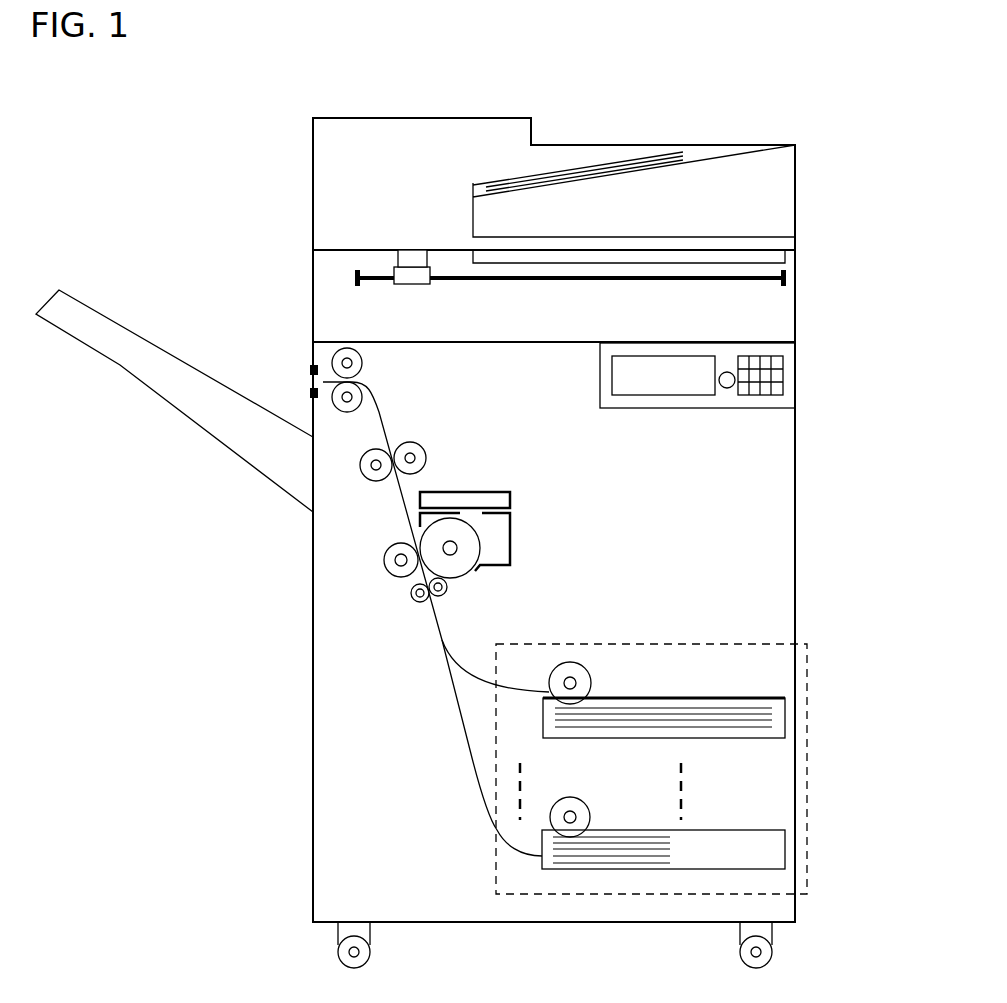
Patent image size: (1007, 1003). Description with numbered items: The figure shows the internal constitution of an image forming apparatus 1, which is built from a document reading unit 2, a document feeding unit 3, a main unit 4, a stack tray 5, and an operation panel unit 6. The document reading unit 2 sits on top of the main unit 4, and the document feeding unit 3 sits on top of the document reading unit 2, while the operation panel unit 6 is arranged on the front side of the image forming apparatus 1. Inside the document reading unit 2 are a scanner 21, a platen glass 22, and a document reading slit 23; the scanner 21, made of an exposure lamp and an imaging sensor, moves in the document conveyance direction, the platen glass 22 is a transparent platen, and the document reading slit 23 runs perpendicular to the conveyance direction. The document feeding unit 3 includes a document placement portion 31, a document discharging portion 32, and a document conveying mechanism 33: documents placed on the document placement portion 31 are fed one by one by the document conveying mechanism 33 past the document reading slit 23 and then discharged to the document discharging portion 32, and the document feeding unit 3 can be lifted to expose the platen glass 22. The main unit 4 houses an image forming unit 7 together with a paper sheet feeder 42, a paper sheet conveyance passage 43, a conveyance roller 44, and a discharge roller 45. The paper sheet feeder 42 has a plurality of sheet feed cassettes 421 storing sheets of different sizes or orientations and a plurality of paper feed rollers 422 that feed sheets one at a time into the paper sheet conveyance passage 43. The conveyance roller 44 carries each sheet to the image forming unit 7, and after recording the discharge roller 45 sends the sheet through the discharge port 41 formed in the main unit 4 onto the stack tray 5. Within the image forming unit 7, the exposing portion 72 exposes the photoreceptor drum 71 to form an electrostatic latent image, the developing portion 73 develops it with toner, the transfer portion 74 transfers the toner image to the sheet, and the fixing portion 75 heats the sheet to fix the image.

The image forming apparatus 1 is at (240, 147).
The document reading unit 2 is at (303, 287).
The scanner 21 is at (416, 285).
The platen glass 22 is at (778, 258).
The document reading slit 23 is at (416, 254).
The document feeding unit 3 is at (303, 183).
The document placement portion 31 is at (690, 163).
The document discharging portion 32 is at (664, 237).
The document conveying mechanism 33 is at (422, 125).
The main unit 4 is at (810, 603).
The discharge port 41 is at (310, 382).
The paper sheet feeder 42 is at (808, 700).
The sheet feed cassette 421 is at (713, 698).
The paper feed roller 422 is at (592, 688).
The paper sheet conveyance passage 43 is at (428, 604).
The conveyance roller 44 is at (428, 590).
The discharge roller 45 is at (362, 363).
The stack tray 5 is at (196, 435).
The operation panel unit 6 is at (790, 363).
The image forming unit 7 is at (594, 500).
The photoreceptor drum 71 is at (452, 578).
The exposing portion 72 is at (510, 495).
The developing portion 73 is at (510, 530).
The transfer portion 74 is at (384, 558).
The fixing portion 75 is at (427, 455).